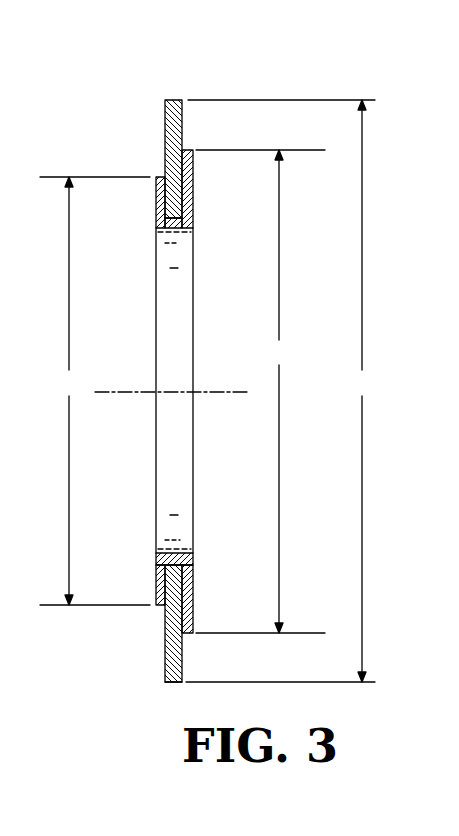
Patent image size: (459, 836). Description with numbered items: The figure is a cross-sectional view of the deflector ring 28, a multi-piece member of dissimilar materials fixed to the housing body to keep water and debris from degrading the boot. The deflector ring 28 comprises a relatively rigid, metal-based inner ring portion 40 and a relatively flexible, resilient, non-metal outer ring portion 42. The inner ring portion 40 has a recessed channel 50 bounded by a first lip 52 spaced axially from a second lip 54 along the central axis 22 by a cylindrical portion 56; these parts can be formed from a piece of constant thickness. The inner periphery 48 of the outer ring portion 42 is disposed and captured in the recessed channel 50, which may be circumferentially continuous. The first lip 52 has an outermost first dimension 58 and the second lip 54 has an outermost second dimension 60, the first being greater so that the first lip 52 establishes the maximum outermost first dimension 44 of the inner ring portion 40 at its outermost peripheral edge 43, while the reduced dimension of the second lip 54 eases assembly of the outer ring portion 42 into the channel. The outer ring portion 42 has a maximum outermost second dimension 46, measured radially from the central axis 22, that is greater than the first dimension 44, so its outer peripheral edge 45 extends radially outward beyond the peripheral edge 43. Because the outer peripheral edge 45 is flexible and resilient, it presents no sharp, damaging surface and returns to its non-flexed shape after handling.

The deflector ring 28 is at (258, 72).
The outermost peripheral edge of the inner ring portion 43 is at (183, 150).
The first lip 52 is at (194, 190).
The second lip 54 is at (156, 210).
The inner ring portion 40 is at (180, 224).
The cylindrical portion 56 is at (173, 229).
The central axis 22 is at (218, 396).
The inner periphery 48 is at (172, 560).
The recessed channel 50 is at (193, 605).
The outer ring portion 42 is at (183, 660).
The outer peripheral edge of the outer ring portion 45 is at (172, 682).
The second dimension 46 is at (280, 391).
The first dimension 44 is at (260, 391).
The first dimension of the first lip 58 is at (260, 391).
The second dimension of the second lip 60 is at (95, 391).